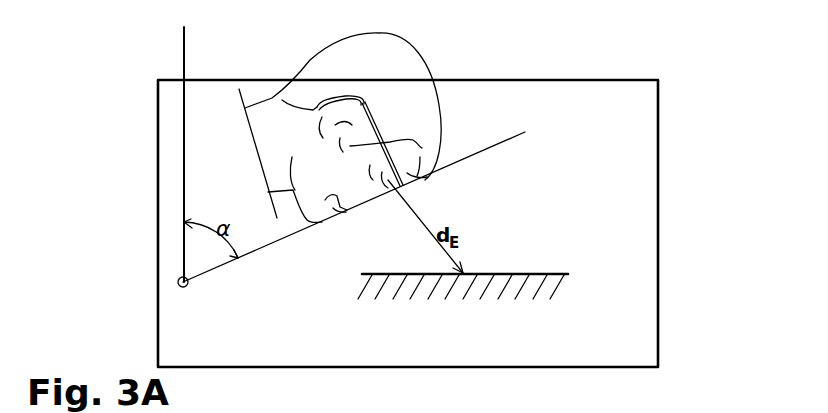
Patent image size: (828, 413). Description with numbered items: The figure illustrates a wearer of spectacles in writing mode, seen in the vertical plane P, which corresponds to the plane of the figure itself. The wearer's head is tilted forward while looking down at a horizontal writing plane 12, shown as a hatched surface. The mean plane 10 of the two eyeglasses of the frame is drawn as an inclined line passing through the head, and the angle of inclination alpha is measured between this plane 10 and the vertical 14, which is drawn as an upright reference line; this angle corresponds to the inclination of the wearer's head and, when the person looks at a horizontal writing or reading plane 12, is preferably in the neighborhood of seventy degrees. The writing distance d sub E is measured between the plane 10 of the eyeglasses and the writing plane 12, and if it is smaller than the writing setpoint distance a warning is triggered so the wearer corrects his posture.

The plane of the eyeglasses 10 is at (512, 132).
The writing plane 12 is at (576, 285).
The vertical 14 is at (184, 44).
The vertical plane P is at (640, 113).